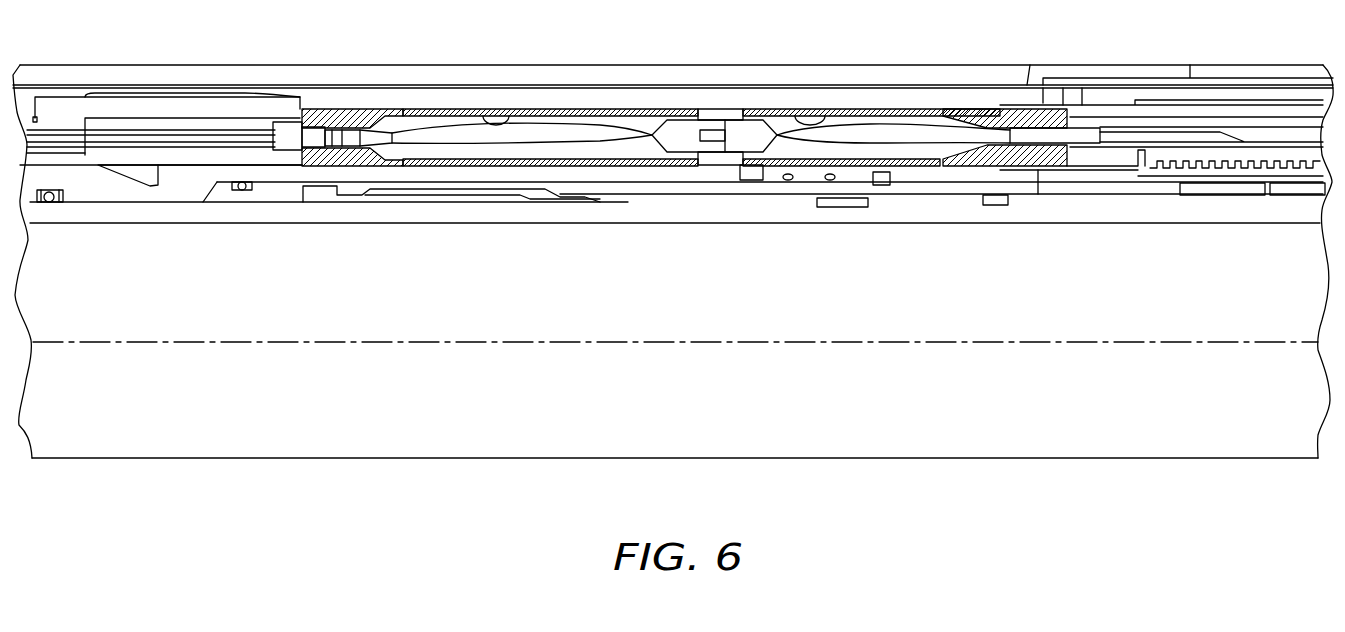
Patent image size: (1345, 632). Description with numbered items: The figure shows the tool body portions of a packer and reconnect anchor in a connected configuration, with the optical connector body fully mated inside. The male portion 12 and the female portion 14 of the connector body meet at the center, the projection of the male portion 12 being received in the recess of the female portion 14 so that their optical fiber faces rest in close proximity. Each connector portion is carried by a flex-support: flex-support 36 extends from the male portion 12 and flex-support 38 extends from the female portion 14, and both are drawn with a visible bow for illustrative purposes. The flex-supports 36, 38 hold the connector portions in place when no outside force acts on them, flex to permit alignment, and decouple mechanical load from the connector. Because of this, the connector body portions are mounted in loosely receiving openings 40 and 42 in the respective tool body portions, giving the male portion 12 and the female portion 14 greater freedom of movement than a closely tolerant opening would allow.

The male portion 12 is at (737, 130).
The female portion 14 is at (680, 128).
The flex-support 36 is at (906, 130).
The flex-support 38 is at (577, 128).
The receiving opening 40 is at (822, 114).
The receiving opening 42 is at (509, 106).